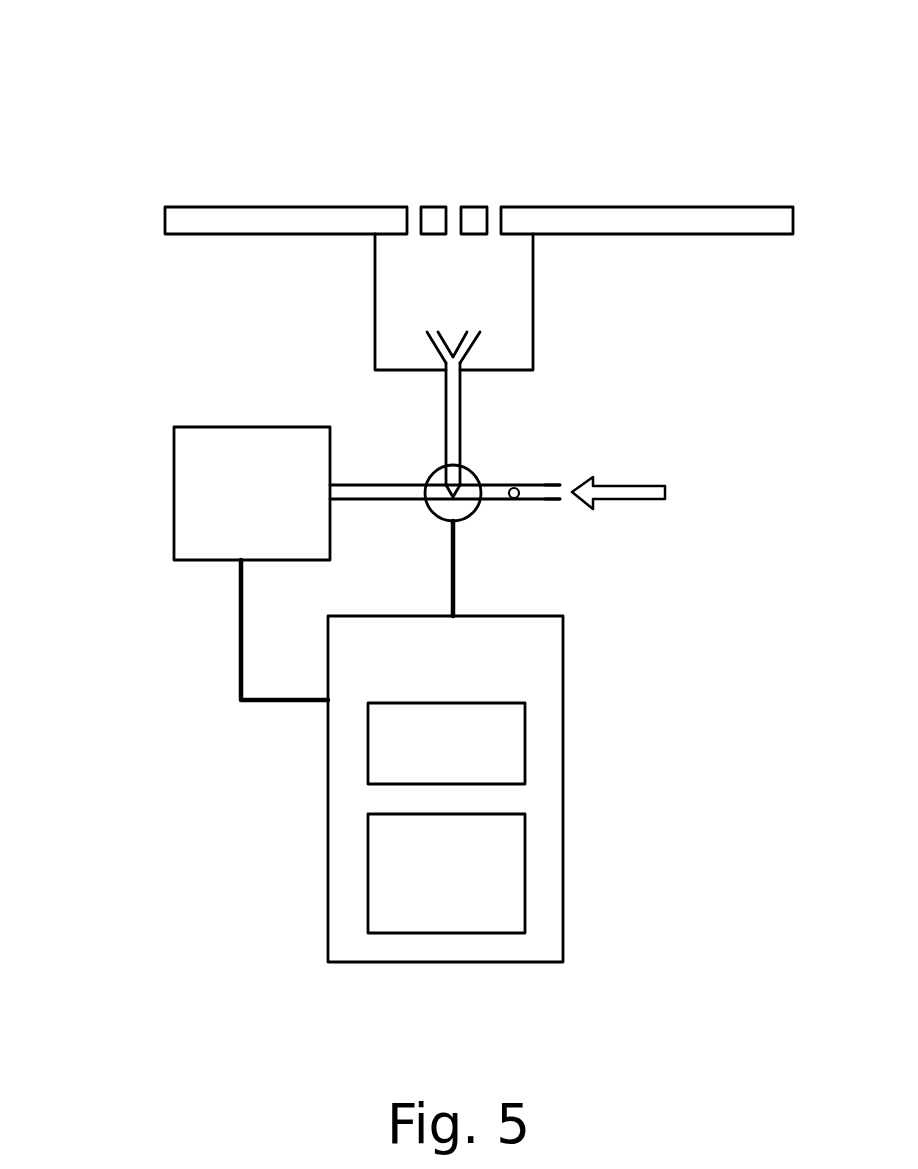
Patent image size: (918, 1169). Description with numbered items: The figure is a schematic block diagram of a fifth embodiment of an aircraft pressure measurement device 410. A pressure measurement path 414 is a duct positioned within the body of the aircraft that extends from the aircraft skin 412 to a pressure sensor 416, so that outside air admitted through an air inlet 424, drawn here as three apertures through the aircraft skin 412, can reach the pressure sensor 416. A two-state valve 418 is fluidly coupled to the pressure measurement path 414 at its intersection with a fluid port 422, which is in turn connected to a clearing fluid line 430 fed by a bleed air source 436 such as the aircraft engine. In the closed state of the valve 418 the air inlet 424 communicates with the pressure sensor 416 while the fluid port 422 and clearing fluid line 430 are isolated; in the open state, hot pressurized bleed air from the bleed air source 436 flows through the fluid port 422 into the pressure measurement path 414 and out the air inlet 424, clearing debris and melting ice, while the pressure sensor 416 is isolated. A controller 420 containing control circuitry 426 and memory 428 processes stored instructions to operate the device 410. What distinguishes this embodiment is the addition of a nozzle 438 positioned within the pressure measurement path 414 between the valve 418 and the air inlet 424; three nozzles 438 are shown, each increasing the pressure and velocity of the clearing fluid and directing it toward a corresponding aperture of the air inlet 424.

The aircraft pressure measurement device 410 is at (181, 98).
The aircraft skin 412 is at (650, 220).
The pressure measurement path 414 is at (452, 405).
The pressure sensor 416 is at (205, 492).
The valve 418 is at (473, 515).
The controller 420 is at (427, 691).
The fluid port 422 is at (515, 487).
The air inlet 424 is at (453, 212).
The control circuitry 426 is at (423, 921).
The memory 428 is at (423, 774).
The clearing fluid line 430 is at (550, 485).
The bleed air source 436 is at (653, 493).
The nozzle 438 is at (475, 347).